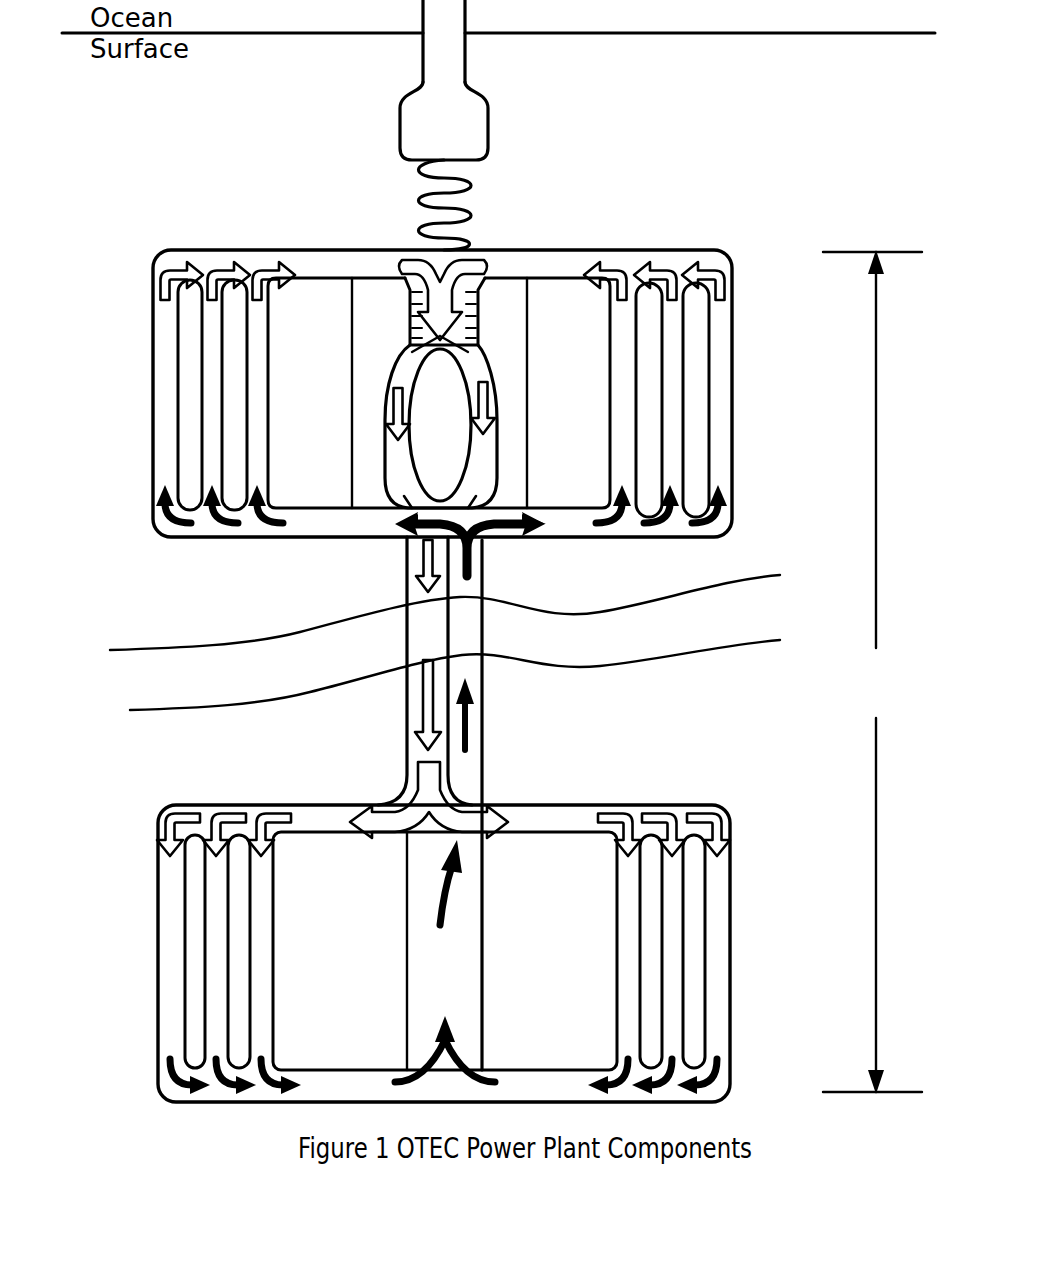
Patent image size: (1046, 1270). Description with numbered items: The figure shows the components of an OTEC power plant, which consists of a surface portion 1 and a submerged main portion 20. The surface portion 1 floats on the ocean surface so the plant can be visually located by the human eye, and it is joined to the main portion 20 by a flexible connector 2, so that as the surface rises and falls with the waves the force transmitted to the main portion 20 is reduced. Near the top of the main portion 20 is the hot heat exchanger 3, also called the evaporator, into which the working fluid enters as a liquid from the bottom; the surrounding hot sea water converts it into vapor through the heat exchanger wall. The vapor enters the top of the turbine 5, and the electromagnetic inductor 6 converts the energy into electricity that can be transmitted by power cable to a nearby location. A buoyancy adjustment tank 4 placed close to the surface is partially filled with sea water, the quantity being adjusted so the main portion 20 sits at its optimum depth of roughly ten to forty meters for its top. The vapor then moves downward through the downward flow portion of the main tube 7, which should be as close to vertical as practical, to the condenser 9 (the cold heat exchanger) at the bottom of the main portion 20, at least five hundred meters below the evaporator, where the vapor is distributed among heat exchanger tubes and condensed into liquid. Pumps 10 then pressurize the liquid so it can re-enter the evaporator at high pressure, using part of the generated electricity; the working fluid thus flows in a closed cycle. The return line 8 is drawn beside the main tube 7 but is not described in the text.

The surface portion 1 is at (470, 66).
The flexible connector 2 is at (485, 200).
The hot heat exchanger 3 is at (738, 372).
The buoyancy adjustment tank 4 is at (522, 338).
The turbine 5 is at (404, 316).
The electromagnetic inductor 6 is at (434, 400).
The main tube 7 is at (399, 572).
The warm water return pipe 8 is at (486, 576).
The condenser 9 is at (738, 952).
The pumps 10 is at (484, 950).
The main portion 20 is at (872, 672).